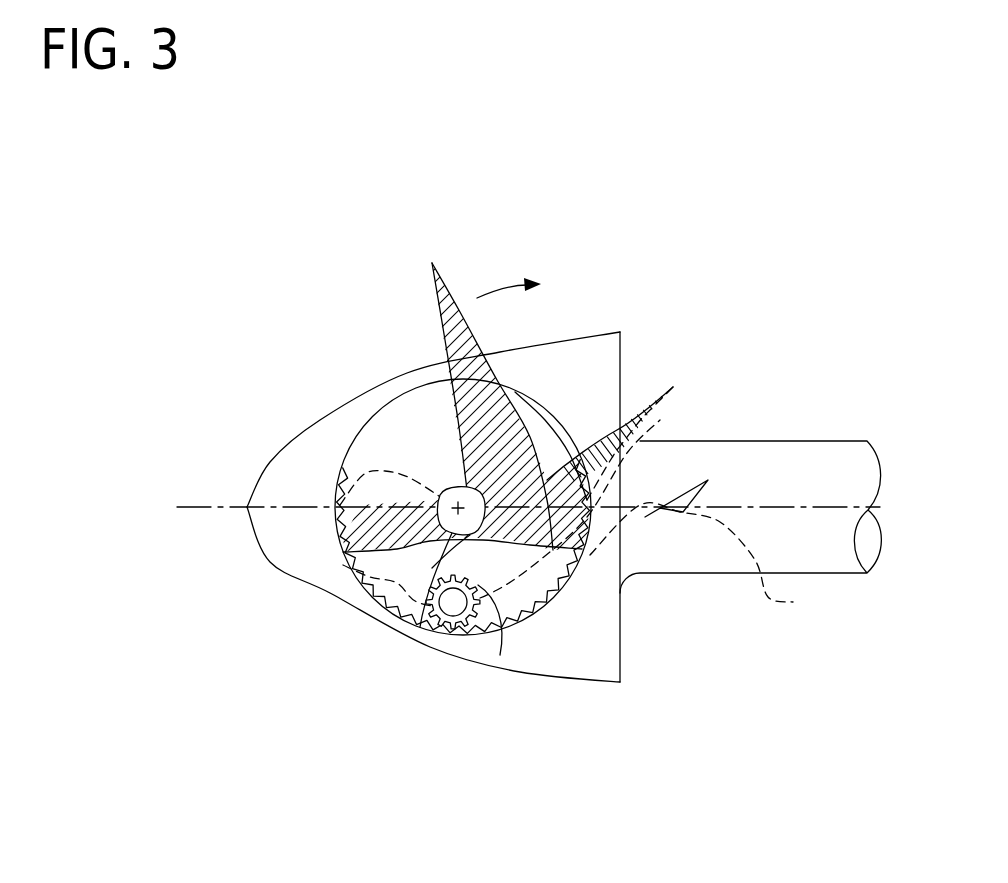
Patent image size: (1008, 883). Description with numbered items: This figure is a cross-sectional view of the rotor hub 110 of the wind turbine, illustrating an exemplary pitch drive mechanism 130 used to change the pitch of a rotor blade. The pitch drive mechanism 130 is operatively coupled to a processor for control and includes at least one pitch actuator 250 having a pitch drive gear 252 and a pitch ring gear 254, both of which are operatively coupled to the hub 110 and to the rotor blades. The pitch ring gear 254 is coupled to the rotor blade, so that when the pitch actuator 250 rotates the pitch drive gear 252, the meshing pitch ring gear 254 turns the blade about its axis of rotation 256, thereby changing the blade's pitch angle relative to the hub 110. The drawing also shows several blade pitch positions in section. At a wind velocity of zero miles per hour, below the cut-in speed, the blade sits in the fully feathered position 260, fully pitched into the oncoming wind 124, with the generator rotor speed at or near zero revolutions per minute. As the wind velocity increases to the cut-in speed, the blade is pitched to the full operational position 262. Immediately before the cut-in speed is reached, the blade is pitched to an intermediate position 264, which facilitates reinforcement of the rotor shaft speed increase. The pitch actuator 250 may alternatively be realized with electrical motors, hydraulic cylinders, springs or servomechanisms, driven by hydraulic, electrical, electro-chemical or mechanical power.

The hub 110 is at (595, 682).
The oncoming wind 124 is at (150, 515).
The pitch drive mechanism 130 is at (459, 652).
The pitch actuator 250 is at (410, 603).
The pitch drive gear 252 is at (500, 655).
The pitch ring gear 254 is at (538, 600).
The axis of rotation 256 is at (447, 487).
The fully feathered position 260 is at (735, 533).
The full operational position 262 is at (450, 287).
The intermediate position 264 is at (660, 425).